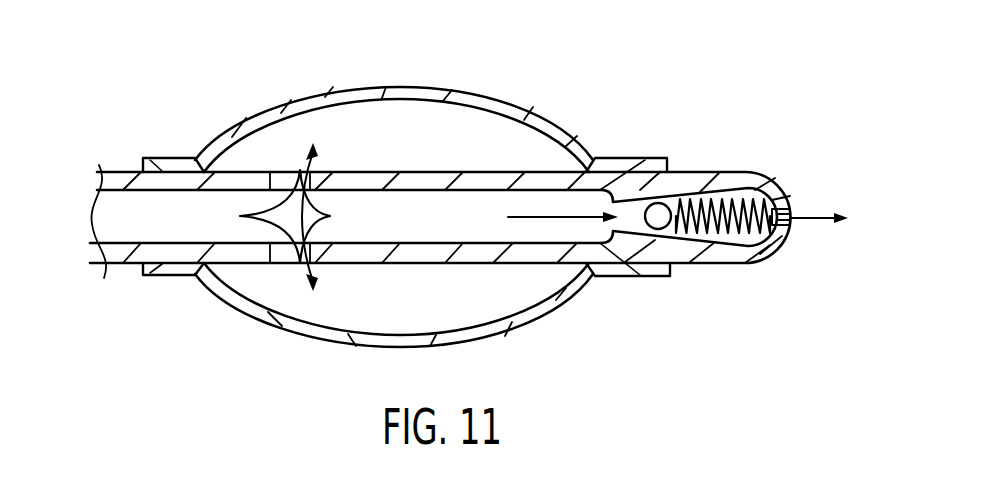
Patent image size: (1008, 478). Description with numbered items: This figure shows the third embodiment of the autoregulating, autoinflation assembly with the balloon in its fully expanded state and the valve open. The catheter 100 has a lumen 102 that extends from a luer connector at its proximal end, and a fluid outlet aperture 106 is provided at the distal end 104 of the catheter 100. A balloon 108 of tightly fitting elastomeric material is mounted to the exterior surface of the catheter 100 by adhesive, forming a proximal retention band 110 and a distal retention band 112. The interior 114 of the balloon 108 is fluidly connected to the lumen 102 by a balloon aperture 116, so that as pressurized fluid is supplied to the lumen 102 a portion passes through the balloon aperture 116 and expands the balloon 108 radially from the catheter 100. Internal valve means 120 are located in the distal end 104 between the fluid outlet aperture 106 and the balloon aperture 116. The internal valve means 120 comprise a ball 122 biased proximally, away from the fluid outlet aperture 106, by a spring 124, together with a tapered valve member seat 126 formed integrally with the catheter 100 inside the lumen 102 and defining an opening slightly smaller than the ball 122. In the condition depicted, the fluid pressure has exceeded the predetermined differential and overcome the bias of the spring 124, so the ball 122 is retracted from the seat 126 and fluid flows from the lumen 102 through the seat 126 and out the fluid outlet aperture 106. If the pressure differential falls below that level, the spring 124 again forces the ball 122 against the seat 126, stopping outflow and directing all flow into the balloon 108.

The catheter 100 is at (117, 165).
The lumen 102 is at (157, 228).
The distal end of the catheter 104 is at (792, 201).
The fluid outlet aperture 106 is at (791, 224).
The balloon 108 is at (400, 88).
The proximal retention band 110 is at (165, 158).
The distal retention band 112 is at (613, 158).
The interior of the balloon 114 is at (480, 137).
The balloon aperture 116 is at (304, 217).
The internal valve means 120 is at (725, 190).
The ball 122 is at (663, 226).
The spring 124 is at (741, 238).
The valve member seat 126 is at (606, 240).